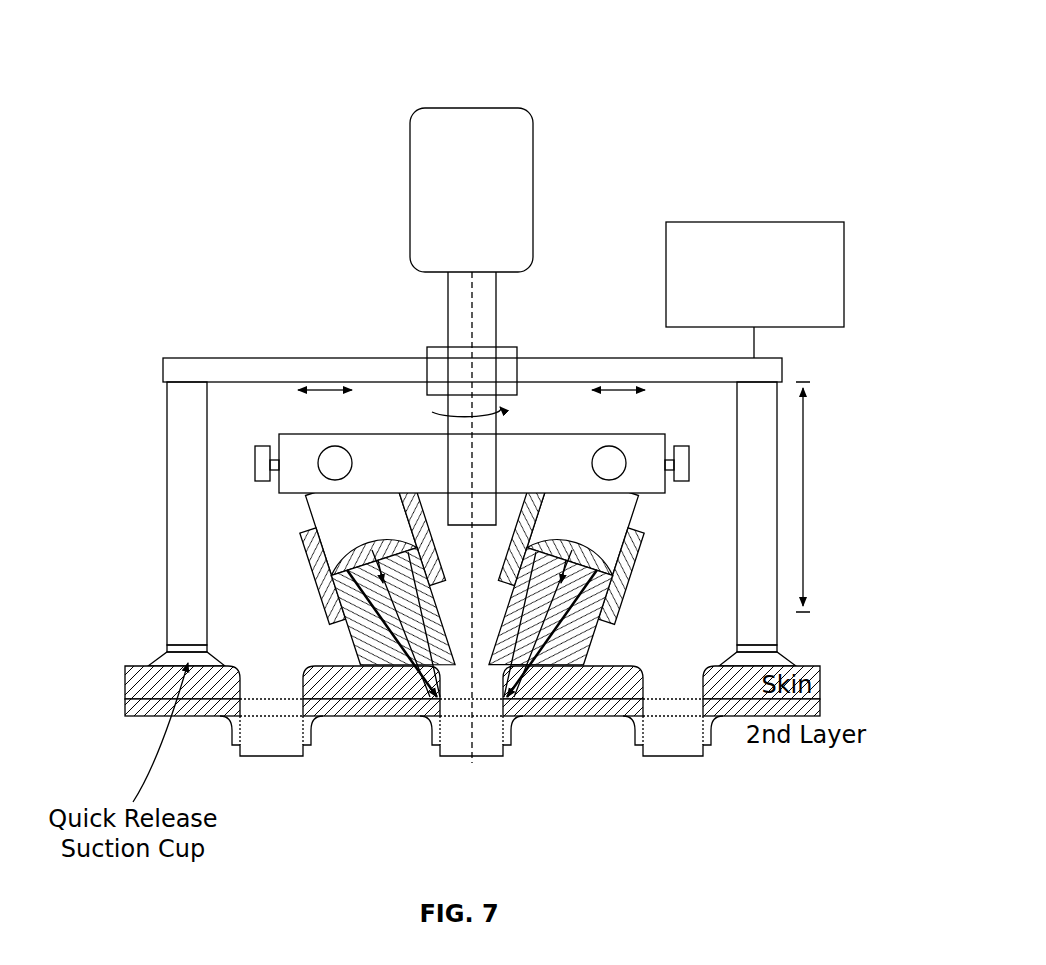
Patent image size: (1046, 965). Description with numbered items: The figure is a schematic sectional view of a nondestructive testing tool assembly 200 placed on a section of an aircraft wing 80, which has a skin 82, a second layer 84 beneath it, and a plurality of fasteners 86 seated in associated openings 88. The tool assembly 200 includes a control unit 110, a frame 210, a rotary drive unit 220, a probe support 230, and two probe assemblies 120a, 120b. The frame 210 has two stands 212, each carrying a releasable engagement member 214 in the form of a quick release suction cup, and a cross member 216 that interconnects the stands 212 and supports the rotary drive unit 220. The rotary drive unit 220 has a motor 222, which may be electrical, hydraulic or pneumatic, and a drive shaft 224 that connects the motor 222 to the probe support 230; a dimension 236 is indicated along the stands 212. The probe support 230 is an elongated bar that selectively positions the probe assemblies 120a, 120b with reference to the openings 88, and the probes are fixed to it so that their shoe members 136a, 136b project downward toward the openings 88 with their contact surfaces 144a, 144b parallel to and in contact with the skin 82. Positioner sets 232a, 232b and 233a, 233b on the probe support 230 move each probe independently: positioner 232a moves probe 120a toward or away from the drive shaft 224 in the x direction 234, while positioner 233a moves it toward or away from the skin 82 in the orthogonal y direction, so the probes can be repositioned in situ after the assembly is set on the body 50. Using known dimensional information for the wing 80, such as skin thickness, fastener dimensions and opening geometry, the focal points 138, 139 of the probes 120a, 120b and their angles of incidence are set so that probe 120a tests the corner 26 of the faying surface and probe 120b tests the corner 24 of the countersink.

The NDT tool assembly 200 is at (722, 33).
The rotary drive unit 220 is at (467, 190).
The motor 222 is at (535, 226).
The drive shaft 224 is at (498, 318).
The frame 210 is at (472, 334).
The cross member 216 is at (205, 357).
The x direction 234 is at (320, 388).
The control unit 110 is at (737, 288).
The positioner 232a is at (262, 445).
The positioner 232b is at (683, 445).
The probe support 230 is at (474, 467).
The positioner 233a is at (318, 463).
The positioner 233b is at (626, 463).
The stand 212 is at (167, 470).
The releasable engagement member 214 is at (158, 664).
The height dimension 236 is at (805, 473).
The probe assembly 120a is at (323, 562).
The probe assembly 120b is at (637, 541).
The focal point 139 is at (480, 608).
The focal point 138 is at (443, 662).
The shoe member 136a is at (590, 637).
The shoe member 136b is at (352, 630).
The skin 82 is at (128, 680).
The second layer 84 is at (128, 708).
The aircraft wing 80 is at (438, 729).
The fastener 86 is at (250, 757).
The opening 88 is at (258, 700).
The body 50 is at (325, 717).
The contact surface 144a is at (375, 715).
The contact surface 144b is at (568, 660).
The corner 26 is at (438, 704).
The corner 24 is at (515, 712).